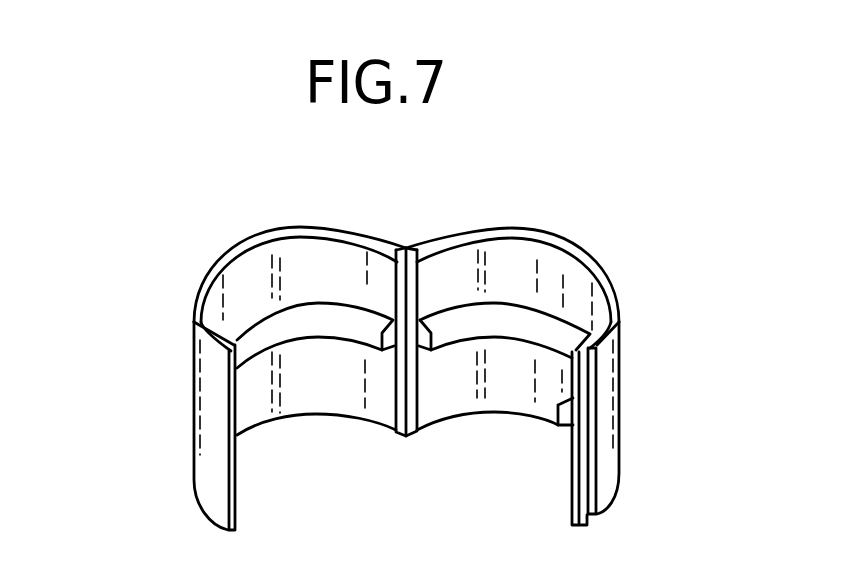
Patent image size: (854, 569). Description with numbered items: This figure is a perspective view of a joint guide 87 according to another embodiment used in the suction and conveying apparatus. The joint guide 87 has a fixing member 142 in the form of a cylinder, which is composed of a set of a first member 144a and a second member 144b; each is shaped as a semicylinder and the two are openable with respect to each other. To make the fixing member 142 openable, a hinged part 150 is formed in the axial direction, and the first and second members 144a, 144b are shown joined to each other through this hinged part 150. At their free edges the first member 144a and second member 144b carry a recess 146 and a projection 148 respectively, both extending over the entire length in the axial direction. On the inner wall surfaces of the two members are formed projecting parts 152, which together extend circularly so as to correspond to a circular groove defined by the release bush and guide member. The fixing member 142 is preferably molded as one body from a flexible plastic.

The joint guide 87 is at (418, 215).
The fixing member 142 is at (193, 412).
The first member 144a is at (607, 467).
The second member 144b is at (202, 473).
The recess 146 is at (197, 322).
The projection 148 is at (591, 367).
The hinged part 150 is at (403, 389).
The projecting parts 152 is at (322, 323).